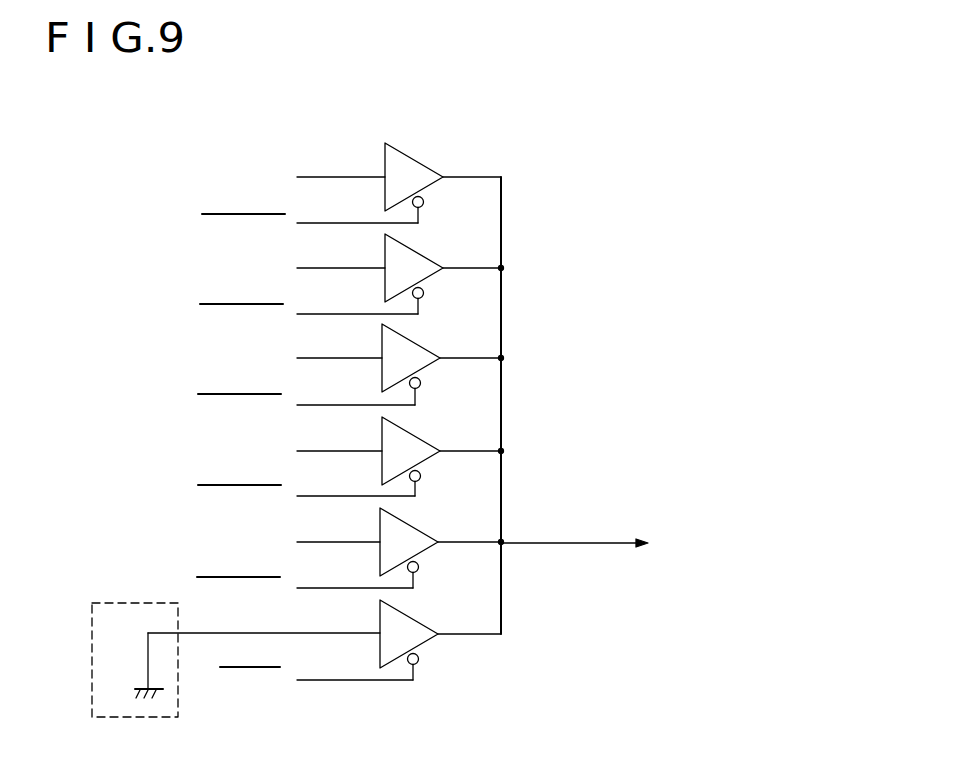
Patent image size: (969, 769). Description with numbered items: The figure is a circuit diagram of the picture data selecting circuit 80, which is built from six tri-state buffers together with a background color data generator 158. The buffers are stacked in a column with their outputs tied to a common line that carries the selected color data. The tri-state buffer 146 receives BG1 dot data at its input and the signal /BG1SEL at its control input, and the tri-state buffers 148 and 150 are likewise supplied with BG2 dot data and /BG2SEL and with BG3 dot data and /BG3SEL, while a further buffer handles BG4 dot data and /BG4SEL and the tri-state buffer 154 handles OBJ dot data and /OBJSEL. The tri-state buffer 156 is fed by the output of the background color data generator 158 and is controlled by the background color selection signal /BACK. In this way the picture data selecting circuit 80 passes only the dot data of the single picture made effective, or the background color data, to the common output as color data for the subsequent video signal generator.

The picture data selecting circuit 80 is at (793, 229).
The tri-state buffer 146 is at (420, 170).
The tri-state buffer 148 is at (418, 257).
The tri-state buffer 150 is at (420, 345).
The tri-state buffer 154 is at (420, 525).
The tri-state buffer 156 is at (420, 618).
The background color data generator 158 is at (163, 708).